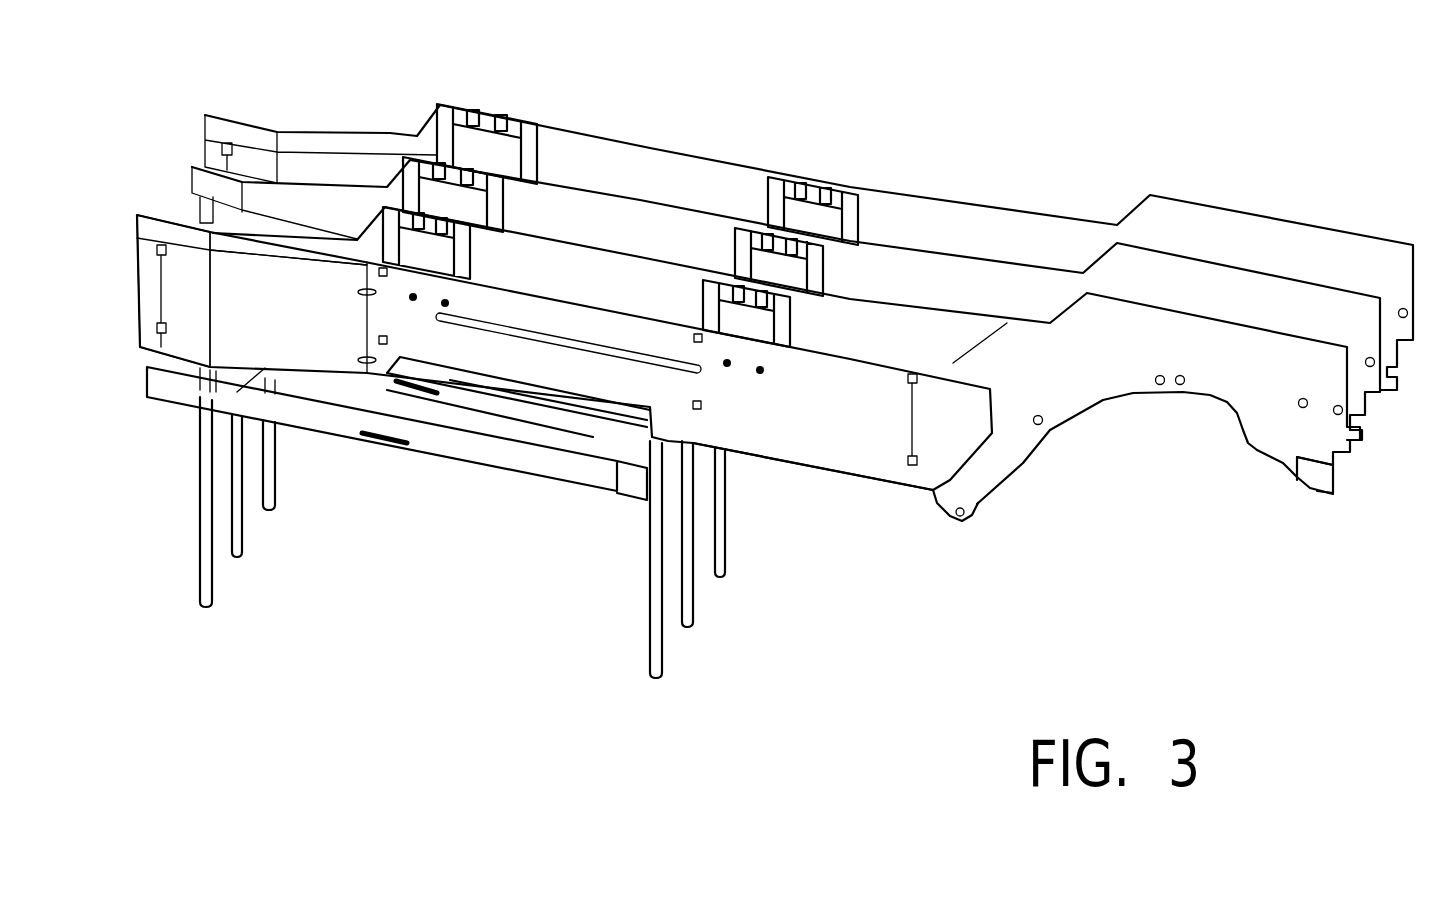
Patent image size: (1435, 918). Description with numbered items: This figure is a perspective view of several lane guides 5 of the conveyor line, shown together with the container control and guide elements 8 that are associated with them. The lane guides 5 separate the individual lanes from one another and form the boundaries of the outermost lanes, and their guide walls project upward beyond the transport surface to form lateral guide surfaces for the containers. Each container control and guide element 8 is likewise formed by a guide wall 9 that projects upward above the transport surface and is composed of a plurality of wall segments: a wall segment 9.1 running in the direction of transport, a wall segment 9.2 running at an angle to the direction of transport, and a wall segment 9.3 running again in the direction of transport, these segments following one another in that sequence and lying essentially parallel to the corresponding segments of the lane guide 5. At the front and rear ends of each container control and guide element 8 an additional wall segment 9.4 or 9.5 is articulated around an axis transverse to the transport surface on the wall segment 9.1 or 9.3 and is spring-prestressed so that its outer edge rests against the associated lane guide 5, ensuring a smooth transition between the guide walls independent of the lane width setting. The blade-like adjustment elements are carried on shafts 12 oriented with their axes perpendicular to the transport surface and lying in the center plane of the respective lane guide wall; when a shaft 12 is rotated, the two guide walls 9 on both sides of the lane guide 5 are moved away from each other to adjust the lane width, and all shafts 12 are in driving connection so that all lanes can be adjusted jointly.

The lane guide 5 is at (655, 240).
The container control and guide element 8 is at (807, 484).
The guide wall 9 is at (753, 474).
The wall segment 9.1 is at (191, 309).
The wall segment 9.2 is at (327, 340).
The wall segment 9.3 is at (610, 378).
The wall segment 9.4 is at (143, 332).
The wall segment 9.5 is at (947, 440).
The shaft 12 is at (207, 570).